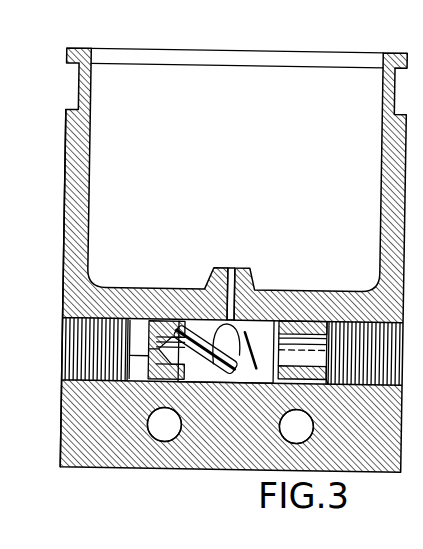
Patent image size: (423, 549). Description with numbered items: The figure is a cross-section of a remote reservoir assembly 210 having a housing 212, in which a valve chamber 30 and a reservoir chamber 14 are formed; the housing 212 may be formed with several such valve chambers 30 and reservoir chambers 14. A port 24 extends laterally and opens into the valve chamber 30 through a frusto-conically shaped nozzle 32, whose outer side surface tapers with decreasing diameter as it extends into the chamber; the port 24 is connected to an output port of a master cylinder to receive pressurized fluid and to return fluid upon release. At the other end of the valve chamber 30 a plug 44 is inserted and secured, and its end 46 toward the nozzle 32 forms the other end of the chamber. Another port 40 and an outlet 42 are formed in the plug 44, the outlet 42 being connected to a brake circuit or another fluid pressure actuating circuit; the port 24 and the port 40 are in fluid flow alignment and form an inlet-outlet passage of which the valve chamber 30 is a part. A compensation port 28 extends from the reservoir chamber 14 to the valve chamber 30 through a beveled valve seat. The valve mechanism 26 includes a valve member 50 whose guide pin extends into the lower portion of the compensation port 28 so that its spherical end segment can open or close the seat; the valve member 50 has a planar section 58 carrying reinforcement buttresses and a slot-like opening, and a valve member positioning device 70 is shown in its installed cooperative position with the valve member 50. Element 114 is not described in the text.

The reservoir chamber 14 is at (212, 84).
The remote reservoir assembly 210 is at (50, 138).
The housing 212 is at (63, 210).
The compensation port 28 is at (231, 268).
The port 24 is at (163, 352).
The planar section 58 is at (181, 323).
The valve member 50 is at (209, 326).
The port 40 is at (282, 378).
The valve chamber 30 is at (263, 384).
The plug end 46 is at (268, 325).
The plug 44 is at (322, 322).
The outlet 42 is at (306, 380).
The valve member positioning device 70 is at (262, 360).
The valve mechanism 26 is at (204, 384).
The nozzle 32 is at (182, 370).
The arm 114 is at (255, 374).